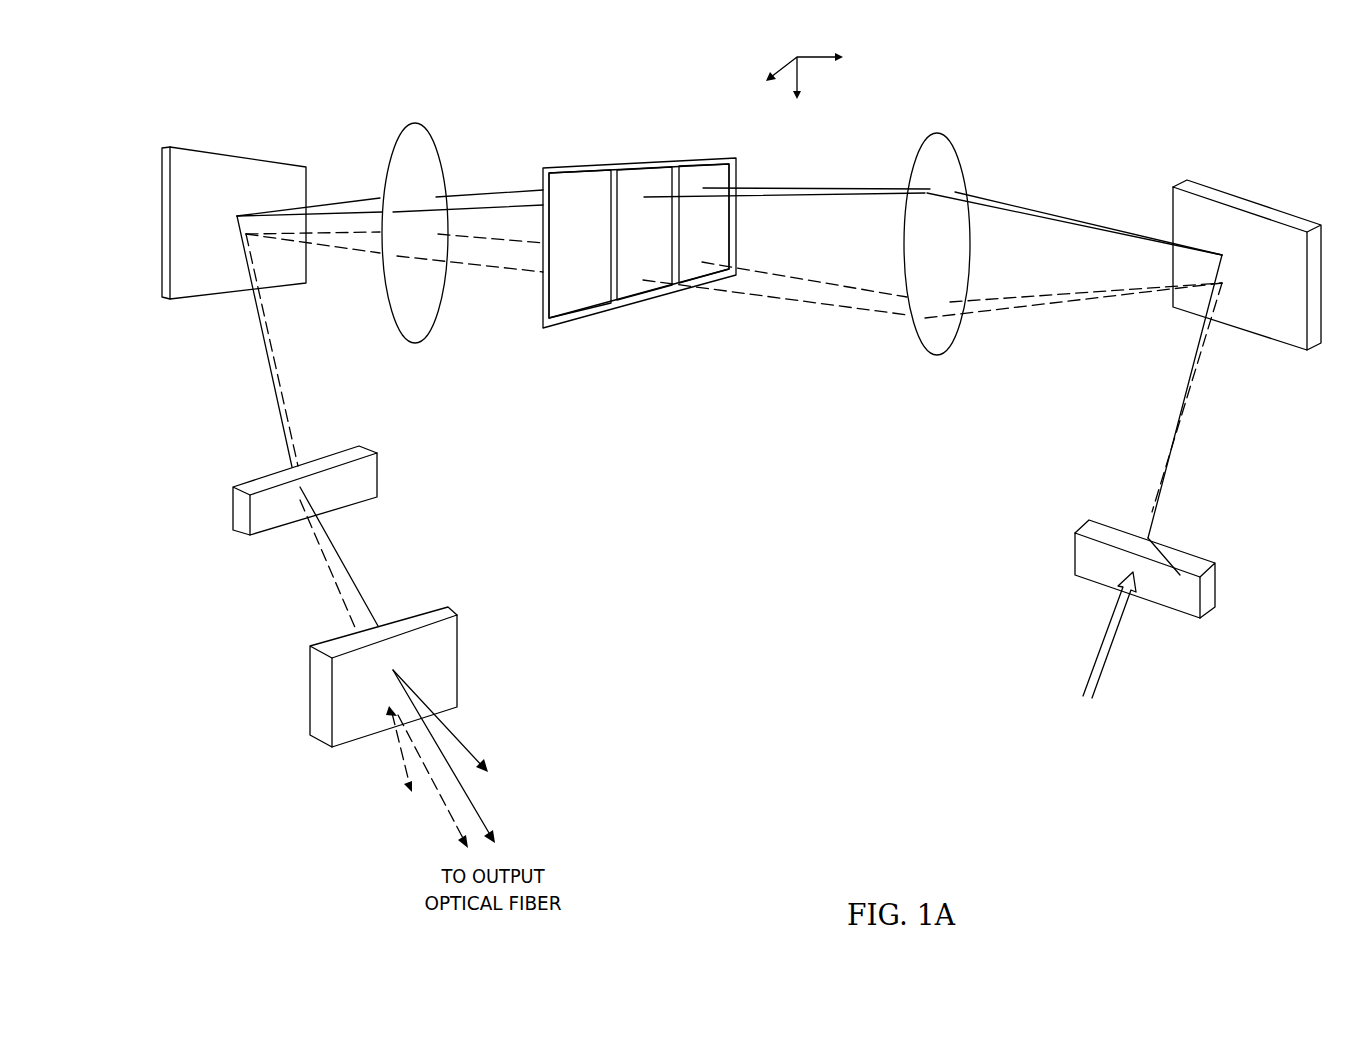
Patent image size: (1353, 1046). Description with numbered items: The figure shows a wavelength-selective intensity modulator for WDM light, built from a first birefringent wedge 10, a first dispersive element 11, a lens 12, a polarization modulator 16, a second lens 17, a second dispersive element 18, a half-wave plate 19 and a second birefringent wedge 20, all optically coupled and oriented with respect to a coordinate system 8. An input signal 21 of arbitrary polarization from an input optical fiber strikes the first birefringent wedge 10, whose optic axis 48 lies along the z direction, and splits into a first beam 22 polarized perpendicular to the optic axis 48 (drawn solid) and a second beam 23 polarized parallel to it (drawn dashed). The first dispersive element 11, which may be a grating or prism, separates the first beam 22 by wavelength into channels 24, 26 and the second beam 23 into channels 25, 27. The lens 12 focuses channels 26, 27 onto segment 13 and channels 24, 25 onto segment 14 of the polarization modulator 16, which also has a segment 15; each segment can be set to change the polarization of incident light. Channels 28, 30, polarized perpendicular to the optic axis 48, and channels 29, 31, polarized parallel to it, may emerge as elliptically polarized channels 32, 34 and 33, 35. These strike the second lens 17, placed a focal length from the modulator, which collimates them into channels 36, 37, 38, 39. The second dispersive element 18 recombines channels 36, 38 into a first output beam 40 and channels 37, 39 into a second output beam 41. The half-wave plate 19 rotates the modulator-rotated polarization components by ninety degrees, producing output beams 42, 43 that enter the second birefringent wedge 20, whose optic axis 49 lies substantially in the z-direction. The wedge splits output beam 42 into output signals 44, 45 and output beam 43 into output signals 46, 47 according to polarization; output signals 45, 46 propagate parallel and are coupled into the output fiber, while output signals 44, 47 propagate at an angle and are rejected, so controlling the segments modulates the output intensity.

The coordinate system 8 is at (858, 42).
The first birefringent wedge 10 is at (1210, 588).
The first dispersive element 11 is at (1283, 217).
The lens 12 is at (943, 140).
The segment 13 is at (704, 200).
The segment 14 is at (645, 175).
The segment 15 is at (582, 178).
The polarization modulator 16 is at (640, 199).
The second lens 17 is at (420, 132).
The second dispersive element 18 is at (190, 162).
The half-wave plate 19 is at (240, 517).
The second birefringent wedge 20 is at (320, 705).
The input signal 21 is at (1080, 675).
The first beam 22 is at (1197, 375).
The second beam 23 is at (1210, 340).
The channel 24 is at (992, 207).
The channel 25 is at (988, 312).
The channel 26 is at (1032, 213).
The channel 27 is at (1028, 302).
The channel 28 is at (757, 193).
The channel 29 is at (772, 298).
The channel 30 is at (813, 187).
The channel 31 is at (828, 287).
The elliptically polarized channel 32 is at (460, 205).
The elliptically polarized channel 33 is at (478, 267).
The elliptically polarized channel 34 is at (507, 190).
The elliptically polarized channel 35 is at (517, 243).
The collimated channel 36 is at (317, 215).
The collimated channel 37 is at (327, 250).
The collimated channel 38 is at (362, 200).
The collimated channel 39 is at (370, 233).
The first output beam 40 is at (270, 375).
The second output beam 41 is at (277, 388).
The output beam 42 is at (345, 558).
The output beam 43 is at (335, 573).
The output signal 44 is at (462, 742).
The output signal 45 is at (473, 803).
The output signal 46 is at (450, 820).
The output signal 47 is at (400, 763).
The optic axis 48 is at (1193, 607).
The optic axis 49 is at (340, 735).